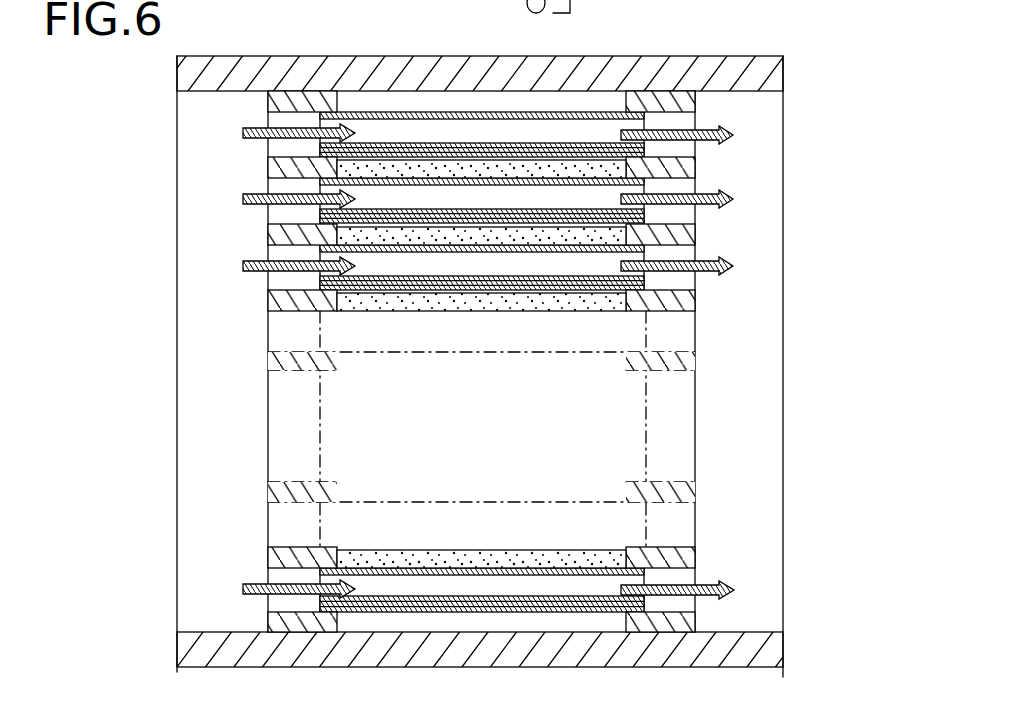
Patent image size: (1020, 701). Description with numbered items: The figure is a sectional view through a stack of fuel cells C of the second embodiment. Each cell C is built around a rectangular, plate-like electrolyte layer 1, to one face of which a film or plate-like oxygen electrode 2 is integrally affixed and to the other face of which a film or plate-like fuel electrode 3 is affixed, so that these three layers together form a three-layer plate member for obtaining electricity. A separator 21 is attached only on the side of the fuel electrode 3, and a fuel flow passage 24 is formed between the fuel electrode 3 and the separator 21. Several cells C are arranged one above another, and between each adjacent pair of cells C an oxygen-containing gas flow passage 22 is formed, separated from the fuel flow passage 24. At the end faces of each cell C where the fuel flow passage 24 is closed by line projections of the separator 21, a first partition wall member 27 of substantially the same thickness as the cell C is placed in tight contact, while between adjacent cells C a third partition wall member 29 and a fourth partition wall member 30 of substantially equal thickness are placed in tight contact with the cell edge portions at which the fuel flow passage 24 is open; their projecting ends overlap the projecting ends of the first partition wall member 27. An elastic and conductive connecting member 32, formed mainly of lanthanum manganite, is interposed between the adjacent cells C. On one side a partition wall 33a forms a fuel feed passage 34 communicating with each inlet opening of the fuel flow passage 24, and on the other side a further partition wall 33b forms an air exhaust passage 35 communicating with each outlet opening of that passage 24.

The electrolyte layer 1 is at (455, 598).
The oxygen electrode 2 is at (420, 609).
The fuel electrode 3 is at (492, 565).
The separator 21 is at (529, 565).
The oxygen-containing gas flow passage 22 is at (412, 166).
The fuel flow passage 24 is at (549, 205).
The first partition wall member 27 is at (690, 123).
The third partition wall member 29 is at (282, 91).
The fourth partition wall member 30 is at (684, 91).
The connecting member 32 is at (472, 140).
The partition wall 33a is at (189, 291).
The further partition wall 33b is at (763, 256).
The fuel feed passage 34 is at (229, 361).
The air exhaust passage 35 is at (732, 361).
The cell C is at (312, 282).